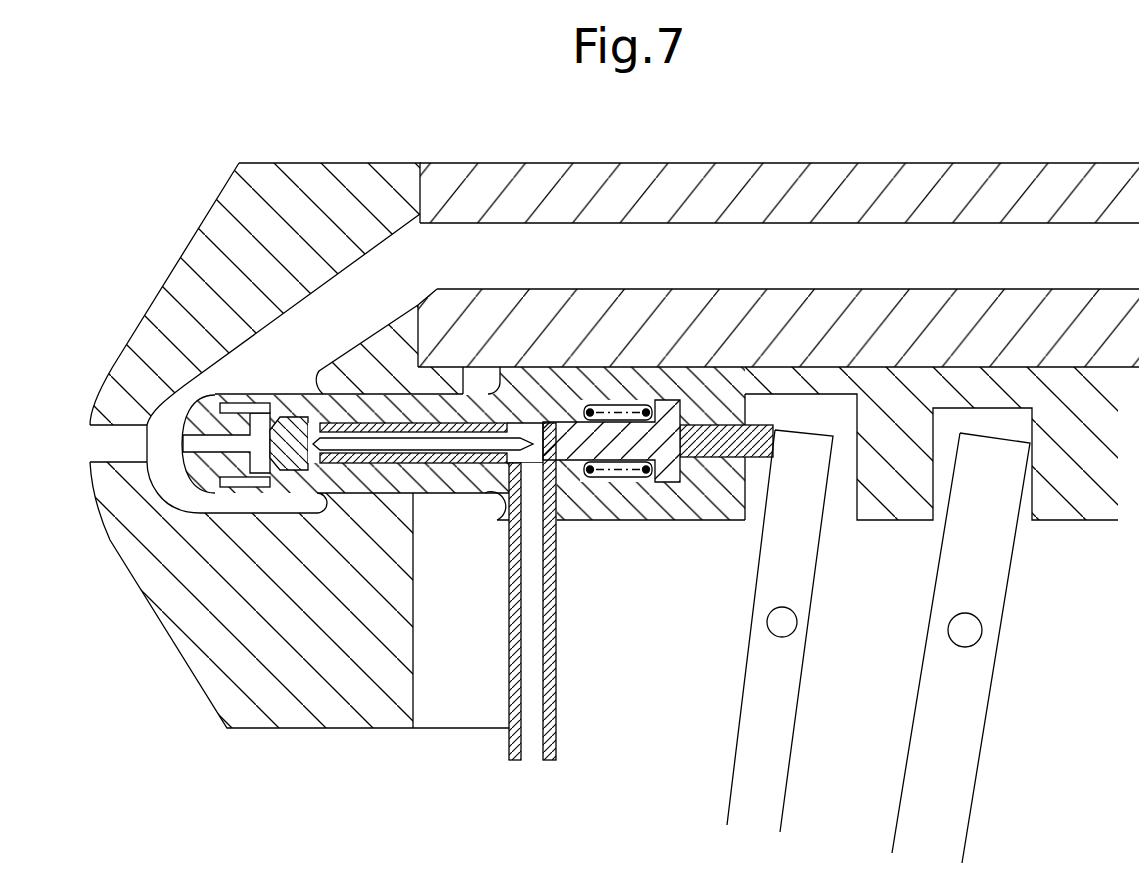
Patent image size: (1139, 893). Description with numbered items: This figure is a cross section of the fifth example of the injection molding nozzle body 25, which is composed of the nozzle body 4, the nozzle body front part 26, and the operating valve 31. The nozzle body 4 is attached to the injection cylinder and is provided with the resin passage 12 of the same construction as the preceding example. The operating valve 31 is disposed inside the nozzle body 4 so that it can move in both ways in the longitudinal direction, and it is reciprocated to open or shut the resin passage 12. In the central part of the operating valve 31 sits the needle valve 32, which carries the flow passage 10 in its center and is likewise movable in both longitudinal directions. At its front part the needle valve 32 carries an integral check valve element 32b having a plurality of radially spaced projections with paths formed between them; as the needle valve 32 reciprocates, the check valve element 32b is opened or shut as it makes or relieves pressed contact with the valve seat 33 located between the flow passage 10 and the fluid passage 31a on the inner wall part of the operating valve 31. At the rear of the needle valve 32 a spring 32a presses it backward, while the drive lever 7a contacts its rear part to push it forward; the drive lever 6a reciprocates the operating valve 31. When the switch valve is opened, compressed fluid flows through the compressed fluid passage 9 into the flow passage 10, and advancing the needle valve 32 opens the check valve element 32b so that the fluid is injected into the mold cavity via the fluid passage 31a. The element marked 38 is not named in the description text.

The injection molding nozzle body 25 is at (860, 150).
The nozzle body front part 26 is at (308, 163).
The resin passage 12 is at (470, 245).
The operating valve 31 is at (540, 383).
The nozzle body 4 is at (740, 165).
The needle valve 32 is at (397, 427).
The slot 38 is at (100, 443).
The fluid passage 31a is at (265, 460).
The check valve element 32b is at (280, 458).
The valve seat 33 is at (300, 483).
The flow passage 10 is at (463, 442).
The spring 32a is at (630, 472).
The compressed fluid passage 9 is at (530, 753).
The drive lever 7a is at (757, 683).
The drive lever 6a is at (932, 688).